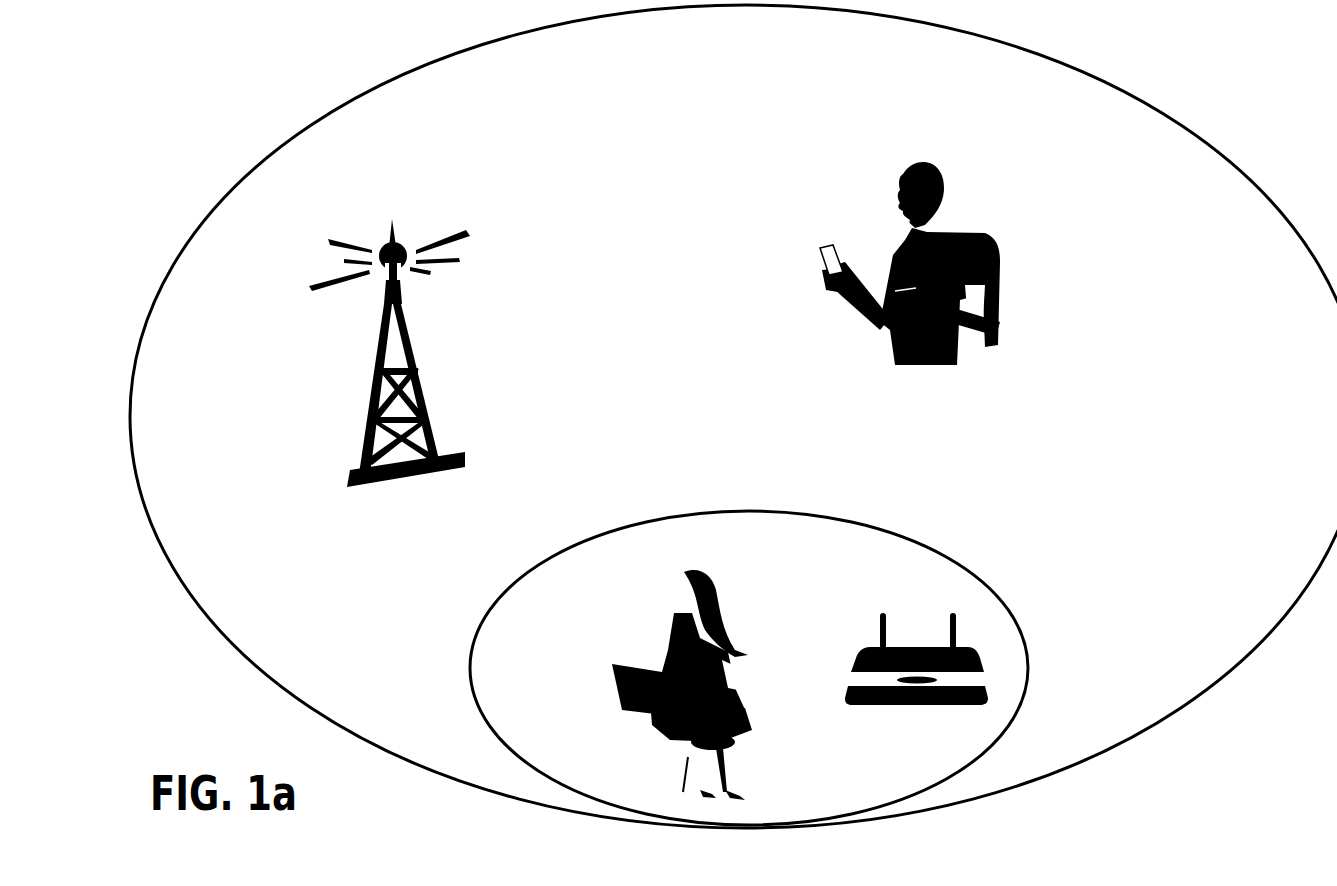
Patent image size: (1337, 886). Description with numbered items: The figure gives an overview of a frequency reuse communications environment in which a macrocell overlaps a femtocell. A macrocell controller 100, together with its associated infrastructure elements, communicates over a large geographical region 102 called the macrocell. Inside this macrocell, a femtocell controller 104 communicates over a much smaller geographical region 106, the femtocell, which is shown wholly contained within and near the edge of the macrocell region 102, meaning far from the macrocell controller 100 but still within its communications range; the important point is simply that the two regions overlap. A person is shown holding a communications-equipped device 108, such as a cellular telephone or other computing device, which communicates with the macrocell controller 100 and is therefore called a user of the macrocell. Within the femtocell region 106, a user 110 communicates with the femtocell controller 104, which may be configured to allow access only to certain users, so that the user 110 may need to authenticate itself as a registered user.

The macrocell controller 100 is at (389, 214).
The macrocell region 102 is at (769, 40).
The femtocell controller 104 is at (972, 720).
The femtocell region 106 is at (769, 547).
The communications-equipped device 108 is at (811, 247).
The user of the femtocell 110 is at (641, 659).